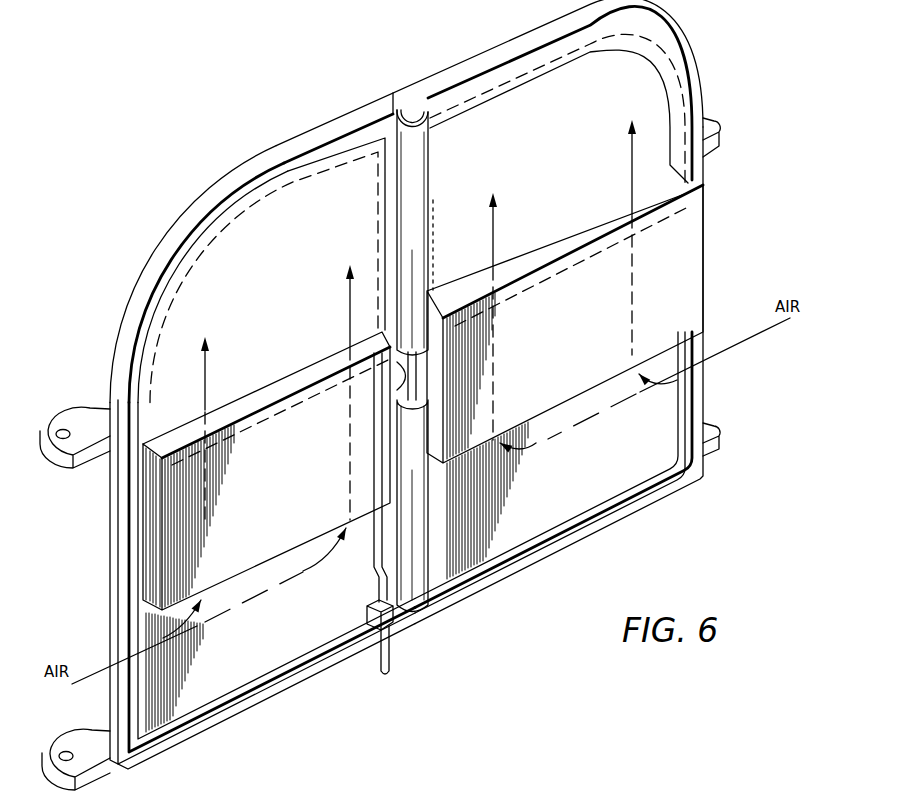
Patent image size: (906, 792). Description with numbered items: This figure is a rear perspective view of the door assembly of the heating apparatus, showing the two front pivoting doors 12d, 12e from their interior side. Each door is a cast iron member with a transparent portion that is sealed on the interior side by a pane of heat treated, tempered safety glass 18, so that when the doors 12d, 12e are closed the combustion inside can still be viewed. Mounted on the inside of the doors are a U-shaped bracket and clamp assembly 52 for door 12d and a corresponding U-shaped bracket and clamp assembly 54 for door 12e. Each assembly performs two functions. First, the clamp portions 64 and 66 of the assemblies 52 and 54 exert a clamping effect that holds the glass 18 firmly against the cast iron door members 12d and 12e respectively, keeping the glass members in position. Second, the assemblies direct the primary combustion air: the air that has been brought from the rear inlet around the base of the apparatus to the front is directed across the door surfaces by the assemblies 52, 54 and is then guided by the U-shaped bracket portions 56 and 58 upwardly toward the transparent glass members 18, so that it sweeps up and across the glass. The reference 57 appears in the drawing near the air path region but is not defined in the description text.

The clamp portion 66 is at (165, 312).
The clamp portion 64 is at (657, 61).
The tempered safety glass 18 is at (320, 279).
The U-shaped bracket and clamp assembly 52 is at (553, 356).
The U-shaped bracket and clamp assembly 54 is at (303, 466).
The U-shaped bracket portion 56 is at (495, 446).
The U-shaped bracket portion 58 is at (233, 577).
The air flow path 57 is at (275, 575).
The door 12d is at (600, 504).
The door 12e is at (258, 681).